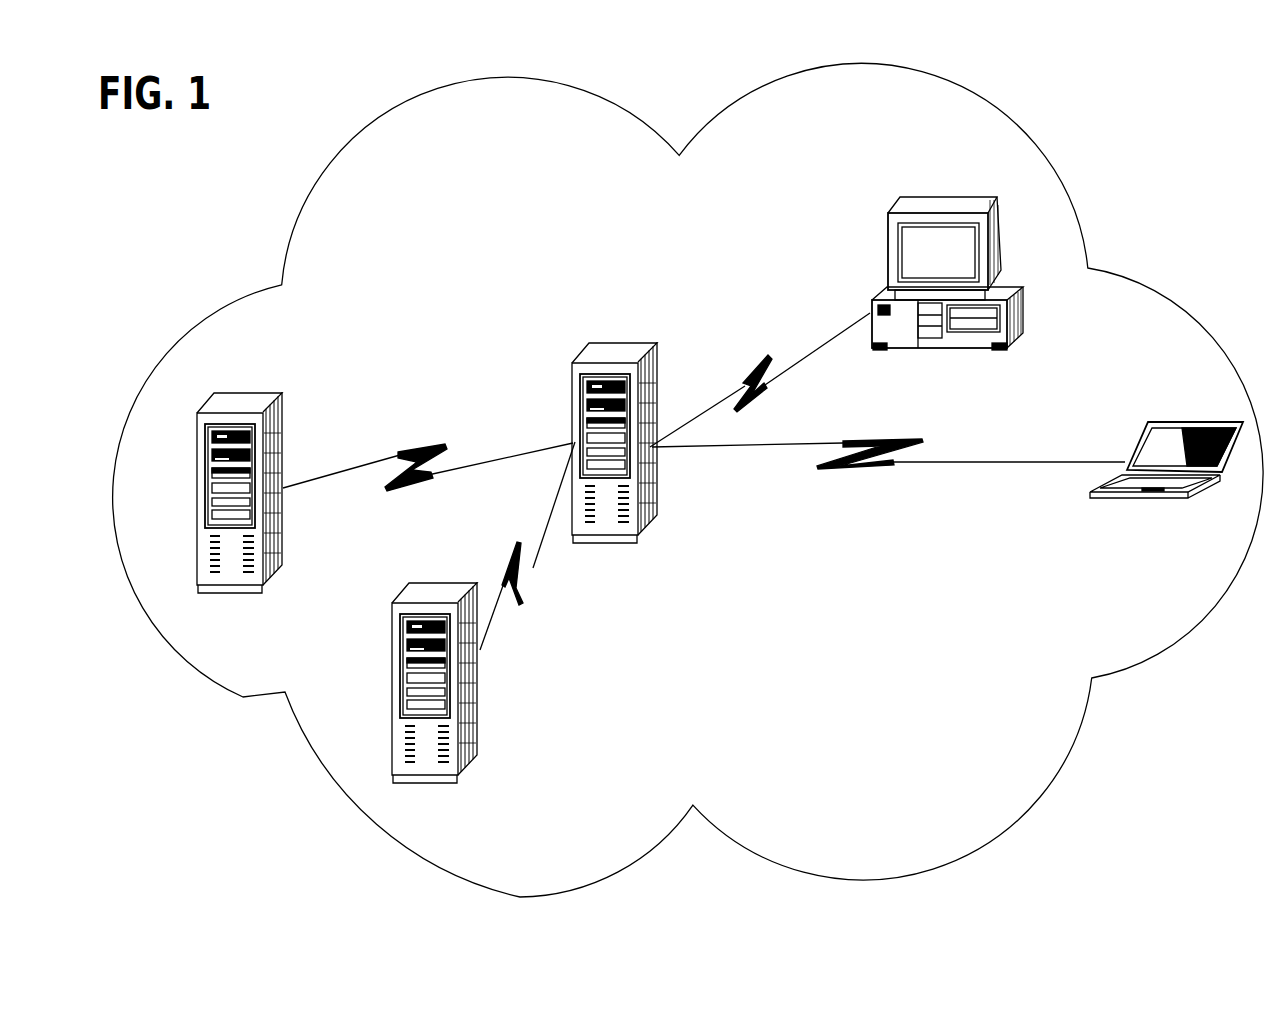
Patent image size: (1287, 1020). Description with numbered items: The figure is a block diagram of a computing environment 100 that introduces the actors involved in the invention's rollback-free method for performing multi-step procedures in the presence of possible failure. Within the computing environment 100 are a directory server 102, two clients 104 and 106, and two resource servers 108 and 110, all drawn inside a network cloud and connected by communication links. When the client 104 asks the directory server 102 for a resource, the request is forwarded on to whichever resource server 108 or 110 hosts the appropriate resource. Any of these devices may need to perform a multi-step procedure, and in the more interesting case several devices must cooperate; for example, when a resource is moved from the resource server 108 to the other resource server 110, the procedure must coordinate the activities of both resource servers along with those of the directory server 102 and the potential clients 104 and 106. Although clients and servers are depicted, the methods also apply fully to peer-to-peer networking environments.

The computing environment 100 is at (863, 110).
The directory server 102 is at (614, 458).
The client 104 is at (915, 262).
The client 106 is at (1166, 477).
The resource server 108 is at (239, 506).
The resource server 110 is at (434, 698).